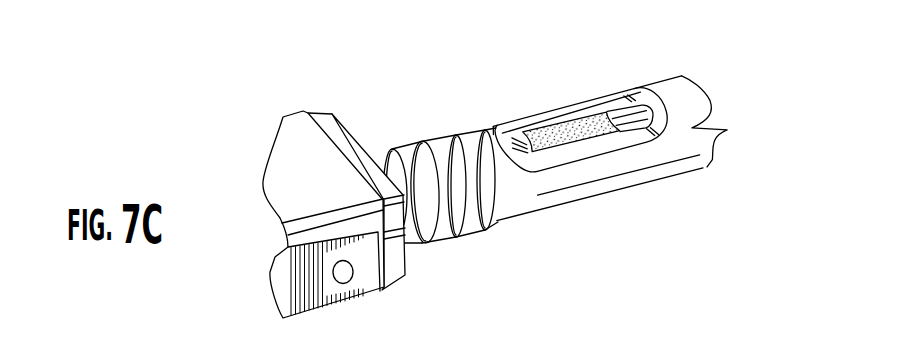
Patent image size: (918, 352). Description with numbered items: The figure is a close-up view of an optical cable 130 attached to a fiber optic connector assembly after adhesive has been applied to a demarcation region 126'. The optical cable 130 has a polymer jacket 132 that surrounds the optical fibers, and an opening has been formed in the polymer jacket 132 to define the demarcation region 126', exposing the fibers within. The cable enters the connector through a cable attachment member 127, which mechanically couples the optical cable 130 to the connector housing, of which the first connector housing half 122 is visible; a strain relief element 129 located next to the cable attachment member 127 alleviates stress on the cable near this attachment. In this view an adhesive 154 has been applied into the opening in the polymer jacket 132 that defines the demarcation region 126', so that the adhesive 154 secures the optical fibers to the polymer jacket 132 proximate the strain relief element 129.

The first connector housing half 122 is at (288, 147).
The cable attachment member 127 is at (356, 136).
The strain relief element 129 is at (426, 140).
The optical cable 130 is at (490, 93).
The demarcation region 126' is at (582, 100).
The adhesive 154 is at (589, 120).
The polymer jacket 132 is at (687, 99).